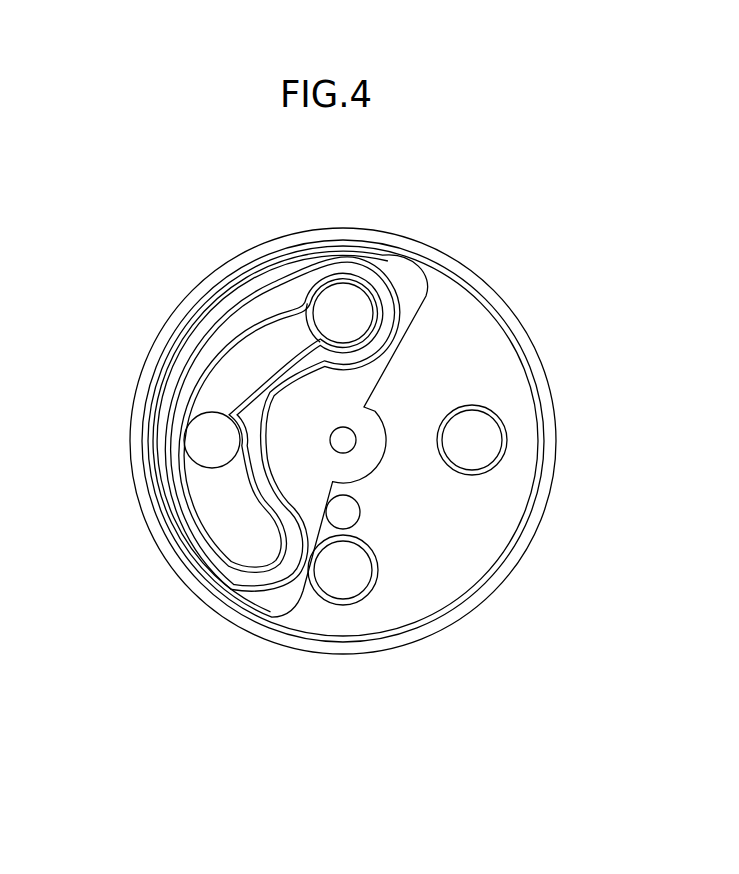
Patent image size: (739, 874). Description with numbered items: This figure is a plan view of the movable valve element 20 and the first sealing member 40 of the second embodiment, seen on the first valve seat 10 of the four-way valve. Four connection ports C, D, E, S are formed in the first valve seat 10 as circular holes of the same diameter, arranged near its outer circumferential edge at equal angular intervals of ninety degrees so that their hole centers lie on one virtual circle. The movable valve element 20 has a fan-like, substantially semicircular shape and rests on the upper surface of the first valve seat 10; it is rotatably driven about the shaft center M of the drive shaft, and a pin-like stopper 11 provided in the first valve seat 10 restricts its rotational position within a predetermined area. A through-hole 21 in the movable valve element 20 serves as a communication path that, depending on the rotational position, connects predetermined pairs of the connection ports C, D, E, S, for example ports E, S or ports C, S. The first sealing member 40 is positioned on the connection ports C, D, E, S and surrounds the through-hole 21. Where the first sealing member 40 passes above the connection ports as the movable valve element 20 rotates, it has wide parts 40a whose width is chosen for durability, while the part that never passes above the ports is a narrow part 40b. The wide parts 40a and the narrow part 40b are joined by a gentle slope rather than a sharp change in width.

The first valve seat 10 is at (428, 246).
The movable valve element 20 is at (400, 272).
The through-hole 21 is at (237, 532).
The first sealing member 40 is at (257, 432).
The wide part 40a is at (390, 305).
The narrow part 40b is at (186, 392).
The stopper 11 is at (352, 514).
The connection port S is at (342, 300).
The connection port E is at (202, 442).
The connection port D is at (339, 590).
The connection port C is at (483, 445).
The shaft center M is at (345, 439).